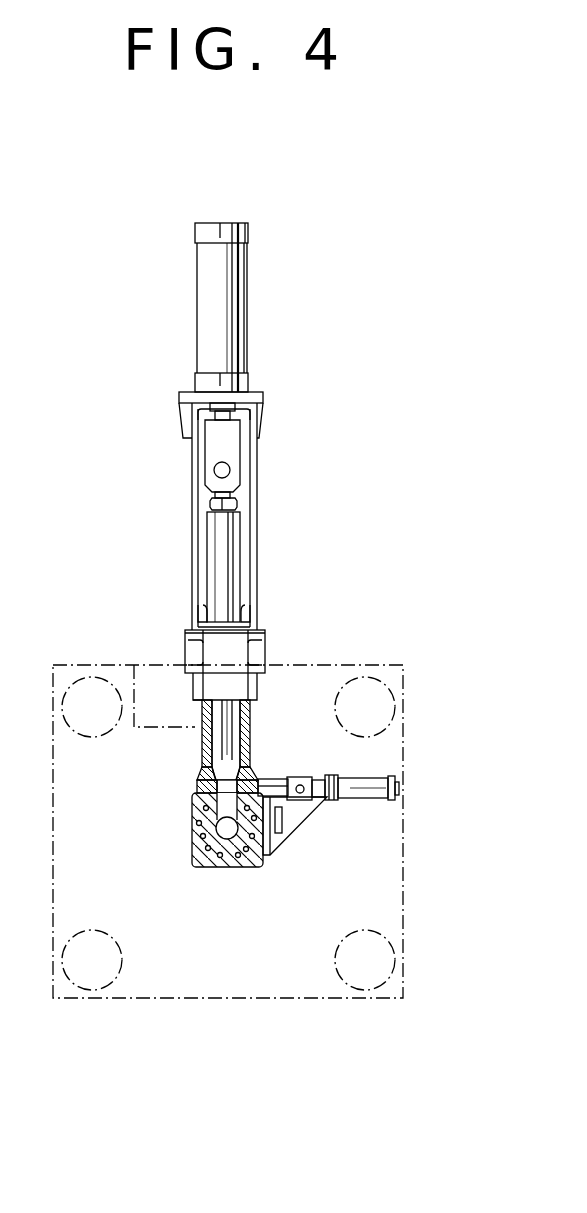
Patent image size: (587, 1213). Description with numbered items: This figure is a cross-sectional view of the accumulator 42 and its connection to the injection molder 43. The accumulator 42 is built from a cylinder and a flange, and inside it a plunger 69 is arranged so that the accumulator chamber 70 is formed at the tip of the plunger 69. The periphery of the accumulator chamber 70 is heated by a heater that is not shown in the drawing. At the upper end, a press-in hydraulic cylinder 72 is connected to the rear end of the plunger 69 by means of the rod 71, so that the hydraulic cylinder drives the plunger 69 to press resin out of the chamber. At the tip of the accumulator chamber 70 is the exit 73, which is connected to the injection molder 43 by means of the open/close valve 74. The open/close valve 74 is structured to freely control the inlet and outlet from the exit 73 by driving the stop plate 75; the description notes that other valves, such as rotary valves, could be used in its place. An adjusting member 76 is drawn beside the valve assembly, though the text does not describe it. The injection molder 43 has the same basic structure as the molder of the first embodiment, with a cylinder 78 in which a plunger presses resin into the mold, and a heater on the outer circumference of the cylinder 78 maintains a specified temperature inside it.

The accumulator 42 is at (282, 490).
The injection molder 43 is at (212, 880).
The plunger 69 is at (232, 546).
The accumulator chamber 70 is at (226, 715).
The rod 71 is at (257, 414).
The press-in hydraulic cylinder 72 is at (246, 294).
The exit 73 is at (232, 762).
The open/close valve 74 is at (376, 765).
The stop plate 75 is at (197, 789).
The adjusting rod 76 is at (399, 788).
The cylinder 78 is at (193, 848).